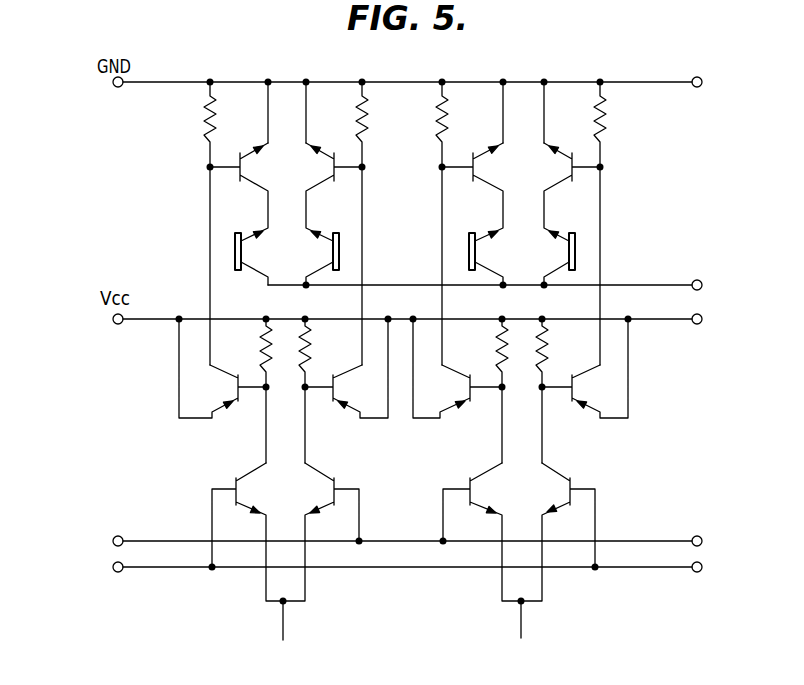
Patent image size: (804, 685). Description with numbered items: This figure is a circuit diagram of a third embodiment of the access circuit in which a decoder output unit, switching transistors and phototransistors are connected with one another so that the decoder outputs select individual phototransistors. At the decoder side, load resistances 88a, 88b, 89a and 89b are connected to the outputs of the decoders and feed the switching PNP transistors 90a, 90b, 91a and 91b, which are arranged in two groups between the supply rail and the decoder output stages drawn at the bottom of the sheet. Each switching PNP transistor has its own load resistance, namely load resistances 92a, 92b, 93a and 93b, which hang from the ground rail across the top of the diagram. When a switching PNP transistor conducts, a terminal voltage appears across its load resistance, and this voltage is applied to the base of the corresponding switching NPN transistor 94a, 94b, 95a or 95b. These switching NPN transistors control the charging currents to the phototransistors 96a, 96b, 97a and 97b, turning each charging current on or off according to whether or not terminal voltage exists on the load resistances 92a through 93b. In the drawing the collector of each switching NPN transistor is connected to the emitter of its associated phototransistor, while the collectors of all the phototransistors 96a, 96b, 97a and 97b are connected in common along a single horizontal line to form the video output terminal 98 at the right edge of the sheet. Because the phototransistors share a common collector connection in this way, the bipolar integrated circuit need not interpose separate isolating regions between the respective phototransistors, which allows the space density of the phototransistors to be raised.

The load resistance 88a is at (263, 348).
The load resistance 88b is at (308, 356).
The load resistance 89a is at (498, 343).
The load resistance 89b is at (547, 360).
The switching PNP transistor 90a is at (226, 402).
The switching PNP transistor 90b is at (346, 404).
The switching PNP transistor 91a is at (462, 382).
The switching PNP transistor 91b is at (584, 388).
The load resistance 92a is at (207, 110).
The load resistance 92b is at (366, 130).
The load resistance 93a is at (437, 120).
The load resistance 93b is at (606, 108).
The switching NPN transistor 94a is at (262, 187).
The switching NPN transistor 94b is at (322, 186).
The switching NPN transistor 95a is at (494, 187).
The switching NPN transistor 95b is at (554, 186).
The phototransistor 96a is at (235, 265).
The phototransistor 96b is at (340, 259).
The phototransistor 97a is at (469, 248).
The phototransistor 97b is at (576, 250).
The video output terminal 98 is at (672, 284).